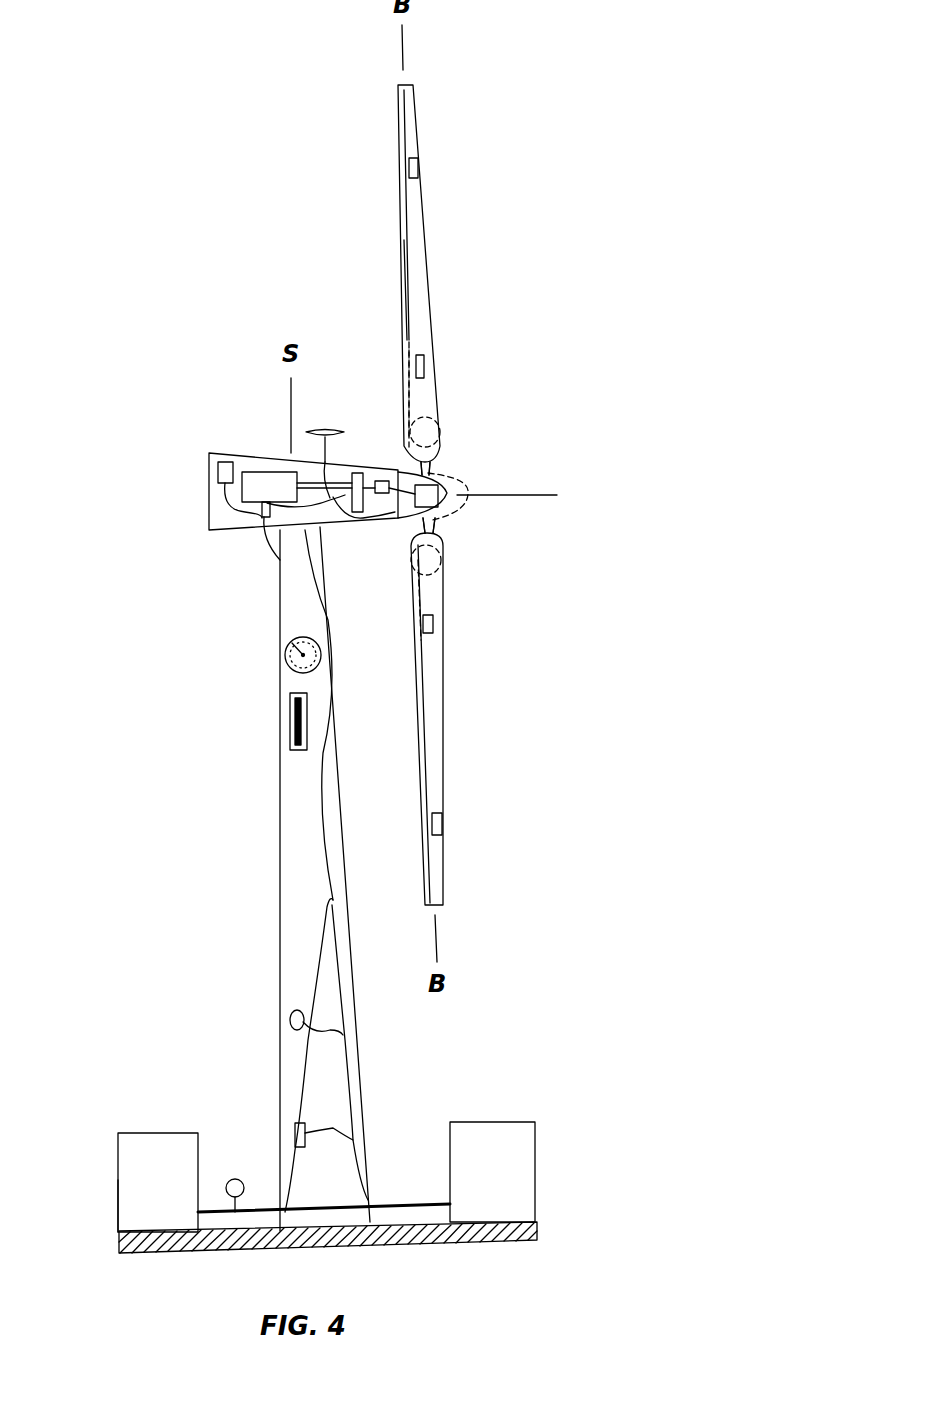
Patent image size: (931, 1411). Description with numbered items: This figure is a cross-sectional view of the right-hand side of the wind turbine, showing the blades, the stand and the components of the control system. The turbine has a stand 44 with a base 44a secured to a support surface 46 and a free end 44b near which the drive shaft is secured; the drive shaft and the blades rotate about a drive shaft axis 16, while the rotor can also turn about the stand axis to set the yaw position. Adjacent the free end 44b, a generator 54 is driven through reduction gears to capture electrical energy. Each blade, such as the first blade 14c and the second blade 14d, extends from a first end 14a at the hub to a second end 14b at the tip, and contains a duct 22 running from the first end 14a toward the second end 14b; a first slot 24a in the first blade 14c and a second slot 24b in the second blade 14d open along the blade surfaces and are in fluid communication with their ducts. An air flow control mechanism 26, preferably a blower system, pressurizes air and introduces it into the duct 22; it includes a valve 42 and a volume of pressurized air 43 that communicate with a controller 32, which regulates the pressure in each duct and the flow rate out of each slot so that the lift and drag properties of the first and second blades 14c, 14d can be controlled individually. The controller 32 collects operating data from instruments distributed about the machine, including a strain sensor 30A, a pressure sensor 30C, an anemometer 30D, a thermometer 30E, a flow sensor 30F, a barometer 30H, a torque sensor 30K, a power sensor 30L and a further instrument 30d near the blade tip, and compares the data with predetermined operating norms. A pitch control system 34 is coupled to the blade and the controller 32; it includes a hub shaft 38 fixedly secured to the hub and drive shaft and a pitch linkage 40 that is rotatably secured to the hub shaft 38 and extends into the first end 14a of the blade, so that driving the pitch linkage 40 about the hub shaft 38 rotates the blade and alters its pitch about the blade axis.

The first end of blade 14a is at (440, 460).
The second end of blade 14b is at (420, 108).
The first blade 14c is at (445, 675).
The second blade 14d is at (432, 270).
The drive shaft axis 16 is at (525, 495).
The duct 22 is at (406, 377).
The first slot 24a is at (421, 748).
The second slot 24b is at (401, 318).
The air flow control mechanism 26 is at (160, 1133).
The strain sensor 30A is at (425, 368).
The pressure sensor 30C is at (290, 1020).
The anemometer 30D is at (318, 428).
The thermometer 30E is at (295, 655).
The flow sensor 30F is at (233, 1179).
The barometer 30H is at (292, 720).
The torque sensor 30K is at (266, 518).
The power sensor 30L is at (218, 472).
The blade tip sensor 30d is at (418, 166).
The controller 32 is at (505, 1122).
The pitch control system 34 is at (410, 530).
The hub shaft 38 is at (445, 470).
The pitch linkage 40 is at (438, 398).
The valve 42 is at (294, 1132).
The volume of pressurized air 43 is at (118, 1180).
The stand 44 is at (291, 838).
The base 44a is at (330, 1225).
The free end 44b is at (292, 535).
The support surface 46 is at (120, 1240).
The generator 54 is at (265, 472).